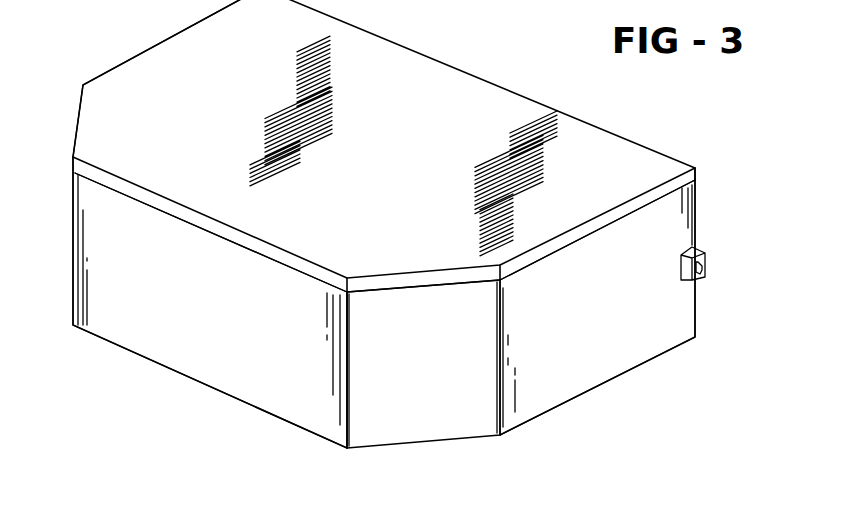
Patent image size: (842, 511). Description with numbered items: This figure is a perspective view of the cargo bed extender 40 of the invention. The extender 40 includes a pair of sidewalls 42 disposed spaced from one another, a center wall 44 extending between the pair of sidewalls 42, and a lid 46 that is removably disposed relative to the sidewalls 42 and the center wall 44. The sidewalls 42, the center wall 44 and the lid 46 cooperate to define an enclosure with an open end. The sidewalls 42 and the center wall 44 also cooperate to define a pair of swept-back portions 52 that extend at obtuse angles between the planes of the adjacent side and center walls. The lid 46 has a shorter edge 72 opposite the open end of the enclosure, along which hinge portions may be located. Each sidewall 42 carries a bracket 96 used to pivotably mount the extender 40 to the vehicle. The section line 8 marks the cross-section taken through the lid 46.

The cargo bed extender 40 is at (723, 177).
The sidewalls 42 is at (147, 52).
The center wall 44 is at (257, 357).
The lid 46 is at (592, 170).
The swept-back portions 52 is at (72, 202).
The shorter edge 72 is at (235, 237).
The bracket 96 is at (713, 252).
The section line 8- 8 is at (450, 77).